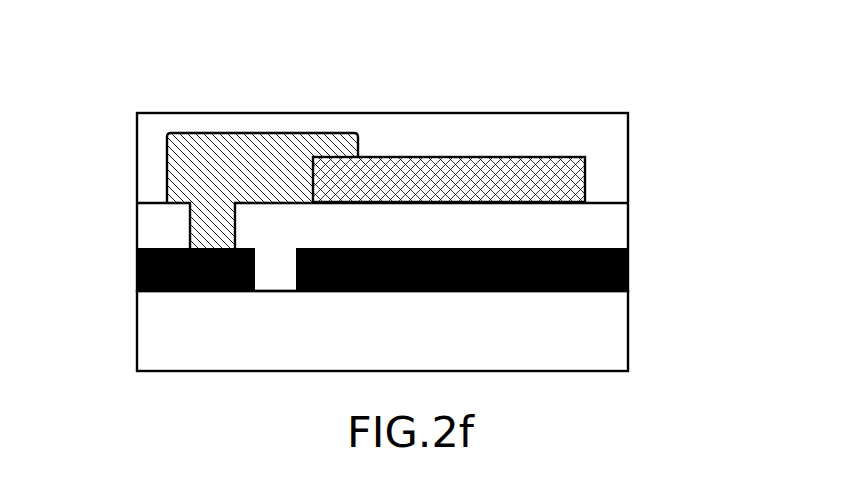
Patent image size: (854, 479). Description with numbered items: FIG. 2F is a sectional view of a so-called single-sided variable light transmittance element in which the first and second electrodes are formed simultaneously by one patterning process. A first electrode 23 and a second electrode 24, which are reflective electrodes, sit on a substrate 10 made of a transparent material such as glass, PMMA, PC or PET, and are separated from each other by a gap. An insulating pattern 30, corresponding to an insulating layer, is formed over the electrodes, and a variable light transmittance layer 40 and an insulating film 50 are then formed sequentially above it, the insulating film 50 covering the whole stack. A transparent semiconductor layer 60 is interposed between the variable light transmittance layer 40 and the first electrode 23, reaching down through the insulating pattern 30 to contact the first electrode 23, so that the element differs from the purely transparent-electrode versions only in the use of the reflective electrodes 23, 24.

The substrate 10 is at (597, 329).
The first electrode 23 is at (175, 273).
The second electrode 24 is at (597, 272).
The insulating pattern 30 is at (597, 226).
The variable light transmittance layer 40 is at (560, 181).
The insulating film 50 is at (597, 138).
The transparent semiconductor layer 60 is at (226, 169).